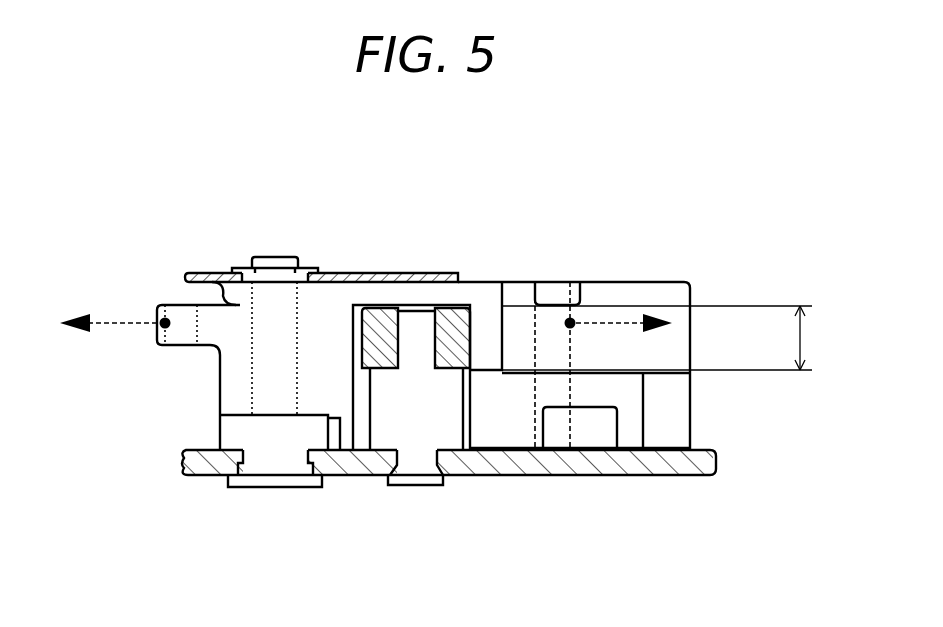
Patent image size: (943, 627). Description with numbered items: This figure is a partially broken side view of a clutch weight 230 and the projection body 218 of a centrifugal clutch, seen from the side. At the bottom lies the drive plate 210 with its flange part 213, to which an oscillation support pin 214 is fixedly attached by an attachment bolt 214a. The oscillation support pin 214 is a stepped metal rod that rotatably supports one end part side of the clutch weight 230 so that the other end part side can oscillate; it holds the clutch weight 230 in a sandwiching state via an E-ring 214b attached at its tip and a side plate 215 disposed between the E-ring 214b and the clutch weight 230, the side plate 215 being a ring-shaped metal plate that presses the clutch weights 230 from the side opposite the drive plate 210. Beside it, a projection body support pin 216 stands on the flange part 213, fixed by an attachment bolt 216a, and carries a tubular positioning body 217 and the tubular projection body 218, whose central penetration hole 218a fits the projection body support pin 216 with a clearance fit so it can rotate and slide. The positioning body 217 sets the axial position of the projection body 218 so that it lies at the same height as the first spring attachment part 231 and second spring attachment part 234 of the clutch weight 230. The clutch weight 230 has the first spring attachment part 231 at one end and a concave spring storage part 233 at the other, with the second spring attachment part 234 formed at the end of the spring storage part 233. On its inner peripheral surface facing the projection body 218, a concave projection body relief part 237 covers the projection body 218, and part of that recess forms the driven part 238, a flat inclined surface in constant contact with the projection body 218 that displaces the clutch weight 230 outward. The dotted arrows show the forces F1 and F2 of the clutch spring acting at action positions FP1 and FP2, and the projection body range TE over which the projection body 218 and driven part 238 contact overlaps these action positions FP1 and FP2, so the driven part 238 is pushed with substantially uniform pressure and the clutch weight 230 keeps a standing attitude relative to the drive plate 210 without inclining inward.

The drive plate 210 is at (196, 450).
The flange part 213 is at (712, 449).
The oscillation support pin 214 is at (275, 257).
The attachment bolt 214a is at (273, 487).
The E-ring 214b is at (237, 268).
The side plate 215 is at (203, 273).
The projection body support pin 216 is at (385, 305).
The attachment bolt 216a is at (413, 486).
The positioning body 217 is at (470, 416).
The projection body 218 is at (352, 305).
The penetration hole 218a is at (427, 305).
The clutch weight 230 is at (175, 303).
The first spring attachment part 231 is at (167, 328).
The spring storage part 233 is at (672, 375).
The second spring attachment part 234 is at (543, 305).
The projection body relief part 237 is at (357, 448).
The driven part 238 is at (468, 328).
The force of clutch spring F1 is at (105, 326).
The force of clutch spring F2 is at (618, 322).
The action position FP1 is at (158, 320).
The action position FP2 is at (575, 328).
The projection body range TE is at (669, 338).